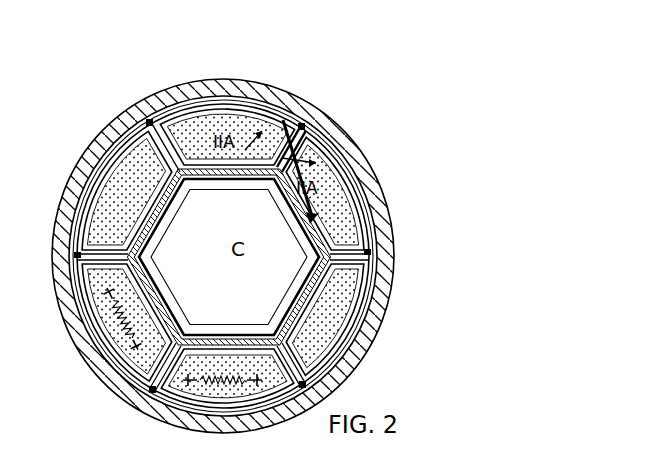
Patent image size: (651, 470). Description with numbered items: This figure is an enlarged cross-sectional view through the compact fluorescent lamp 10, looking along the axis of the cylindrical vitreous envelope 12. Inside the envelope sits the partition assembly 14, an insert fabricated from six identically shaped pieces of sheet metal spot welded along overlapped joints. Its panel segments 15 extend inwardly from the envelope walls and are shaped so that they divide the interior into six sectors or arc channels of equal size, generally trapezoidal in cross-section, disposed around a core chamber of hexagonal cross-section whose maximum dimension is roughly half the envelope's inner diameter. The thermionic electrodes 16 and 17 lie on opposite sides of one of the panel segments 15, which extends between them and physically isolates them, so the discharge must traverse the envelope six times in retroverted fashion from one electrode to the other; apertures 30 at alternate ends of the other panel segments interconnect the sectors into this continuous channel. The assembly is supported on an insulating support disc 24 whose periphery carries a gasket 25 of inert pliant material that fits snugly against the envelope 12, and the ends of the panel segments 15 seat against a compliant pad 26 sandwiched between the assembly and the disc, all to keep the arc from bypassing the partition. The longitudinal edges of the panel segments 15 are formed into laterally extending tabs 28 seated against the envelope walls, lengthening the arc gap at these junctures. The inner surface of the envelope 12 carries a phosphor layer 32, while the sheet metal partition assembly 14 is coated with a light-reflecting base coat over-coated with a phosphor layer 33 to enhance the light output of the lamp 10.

The compact fluorescent lamp 10 is at (50, 130).
The vitreous envelope 12 is at (216, 82).
The partition assembly 14 is at (322, 183).
The panel segments 15 is at (78, 257).
The thermionic electrode 16 is at (112, 345).
The thermionic electrode 17 is at (202, 384).
The support disc 24 is at (323, 336).
The gasket 25 is at (358, 318).
The pad 26 is at (152, 239).
The tabs 28 is at (140, 118).
The apertures 30 is at (8, 410).
The phosphor layer 32 is at (232, 413).
The phosphor layer 33 is at (309, 131).